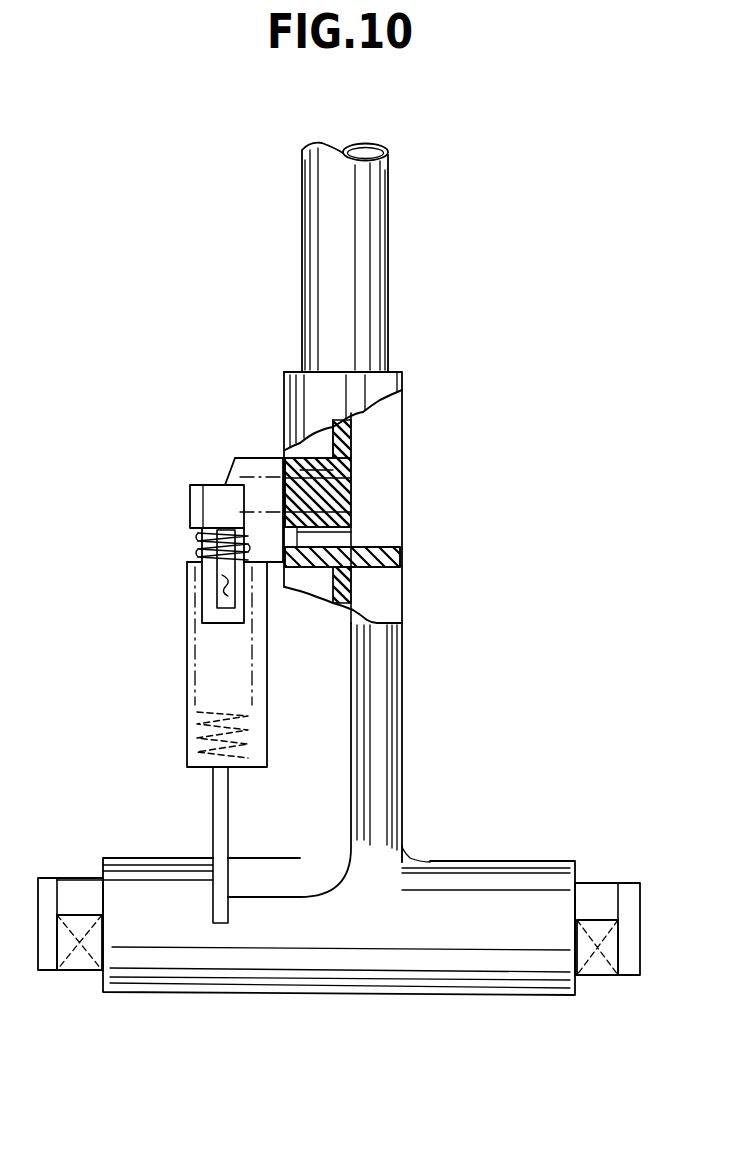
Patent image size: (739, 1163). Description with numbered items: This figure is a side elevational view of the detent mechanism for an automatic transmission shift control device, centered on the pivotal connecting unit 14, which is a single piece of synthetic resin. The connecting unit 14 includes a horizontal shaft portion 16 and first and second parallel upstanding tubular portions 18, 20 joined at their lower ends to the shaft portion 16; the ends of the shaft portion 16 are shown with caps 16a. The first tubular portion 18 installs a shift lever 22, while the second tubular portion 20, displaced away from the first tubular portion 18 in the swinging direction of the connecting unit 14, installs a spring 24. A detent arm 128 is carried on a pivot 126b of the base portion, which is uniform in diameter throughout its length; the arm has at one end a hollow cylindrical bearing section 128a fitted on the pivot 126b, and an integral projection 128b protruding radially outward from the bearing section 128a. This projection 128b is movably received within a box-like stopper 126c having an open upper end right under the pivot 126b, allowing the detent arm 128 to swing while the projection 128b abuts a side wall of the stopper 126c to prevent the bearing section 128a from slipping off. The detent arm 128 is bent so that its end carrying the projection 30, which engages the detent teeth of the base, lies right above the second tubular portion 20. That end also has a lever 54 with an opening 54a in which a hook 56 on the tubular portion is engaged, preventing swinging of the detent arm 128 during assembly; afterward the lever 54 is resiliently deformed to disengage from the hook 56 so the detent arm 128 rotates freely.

The shift lever 22 is at (388, 218).
The first tubular portion 18 is at (402, 383).
The connecting unit 14 is at (412, 712).
The shaft portion 16 is at (527, 860).
The end caps 16a is at (73, 972).
The bearing section 128a is at (315, 458).
The projection 128b is at (337, 540).
The pivot 126b is at (307, 470).
The stopper 126c is at (290, 533).
The projection 30 is at (207, 485).
The detent arm 128 is at (190, 488).
The opening 54a is at (198, 562).
The hook 56 is at (202, 598).
The lever 54 is at (205, 613).
The spring 24 is at (208, 720).
The second tubular portion 20 is at (187, 747).